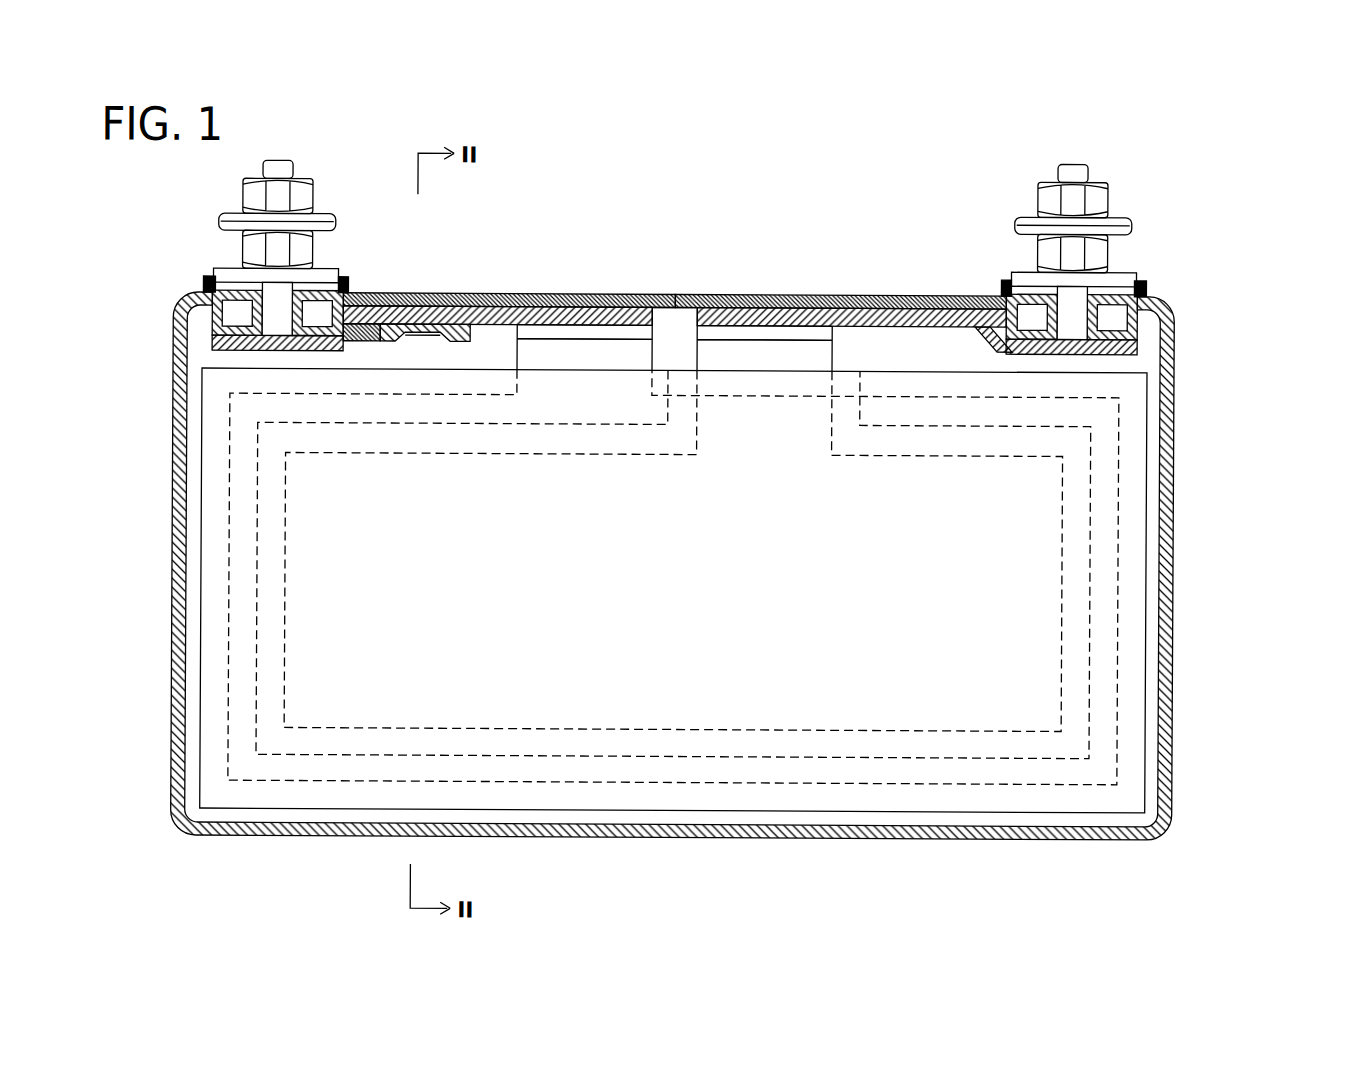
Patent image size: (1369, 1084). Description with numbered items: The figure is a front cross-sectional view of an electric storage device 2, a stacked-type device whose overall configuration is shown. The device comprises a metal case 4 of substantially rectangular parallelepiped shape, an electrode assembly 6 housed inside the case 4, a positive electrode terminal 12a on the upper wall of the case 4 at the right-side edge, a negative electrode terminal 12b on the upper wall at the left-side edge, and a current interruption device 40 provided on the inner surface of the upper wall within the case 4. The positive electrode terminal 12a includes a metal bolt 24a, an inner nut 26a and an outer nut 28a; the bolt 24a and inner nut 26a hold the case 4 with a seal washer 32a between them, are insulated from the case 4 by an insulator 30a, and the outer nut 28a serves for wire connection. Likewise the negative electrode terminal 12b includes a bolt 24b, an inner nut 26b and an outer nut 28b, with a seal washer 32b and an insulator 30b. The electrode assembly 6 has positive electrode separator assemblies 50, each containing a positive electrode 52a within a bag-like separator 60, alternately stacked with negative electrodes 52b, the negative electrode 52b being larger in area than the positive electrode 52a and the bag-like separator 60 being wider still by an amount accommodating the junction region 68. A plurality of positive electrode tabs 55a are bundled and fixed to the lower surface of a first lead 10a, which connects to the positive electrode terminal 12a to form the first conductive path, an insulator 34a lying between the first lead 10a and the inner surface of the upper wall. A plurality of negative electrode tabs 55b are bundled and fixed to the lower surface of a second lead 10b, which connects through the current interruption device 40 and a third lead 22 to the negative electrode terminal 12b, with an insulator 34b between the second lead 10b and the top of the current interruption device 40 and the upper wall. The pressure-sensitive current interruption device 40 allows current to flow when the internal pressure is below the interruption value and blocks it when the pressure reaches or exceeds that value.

The electric storage device 2 is at (933, 113).
The case 4 is at (1172, 393).
The electrode assembly 6 is at (1296, 450).
The first lead 10a is at (940, 298).
The second lead 10b is at (495, 300).
The positive electrode terminal 12a is at (1104, 147).
The negative electrode terminal 12b is at (309, 149).
The third lead 22 is at (365, 315).
The bolt 24a is at (1098, 250).
The bolt 24b is at (245, 247).
The inner nut 26a is at (1123, 323).
The inner nut 26b is at (227, 322).
The outer nut 28a is at (1098, 197).
The outer nut 28b is at (245, 197).
The insulator 30a is at (1122, 347).
The insulator 30b is at (227, 348).
The seal washer 32a is at (1003, 283).
The seal washer 32b is at (205, 285).
The insulator 34a is at (762, 318).
The insulator 34b is at (578, 308).
The current interruption device 40 is at (412, 358).
The positive electrode separator assembly 50 is at (843, 339).
The positive electrode 52a is at (1092, 480).
The negative electrode 52b is at (661, 339).
The positive electrode tab 55a is at (768, 338).
The negative electrode tab 55b is at (618, 340).
The bag-like separator 60 is at (1150, 428).
The junction region 68 is at (1128, 735).